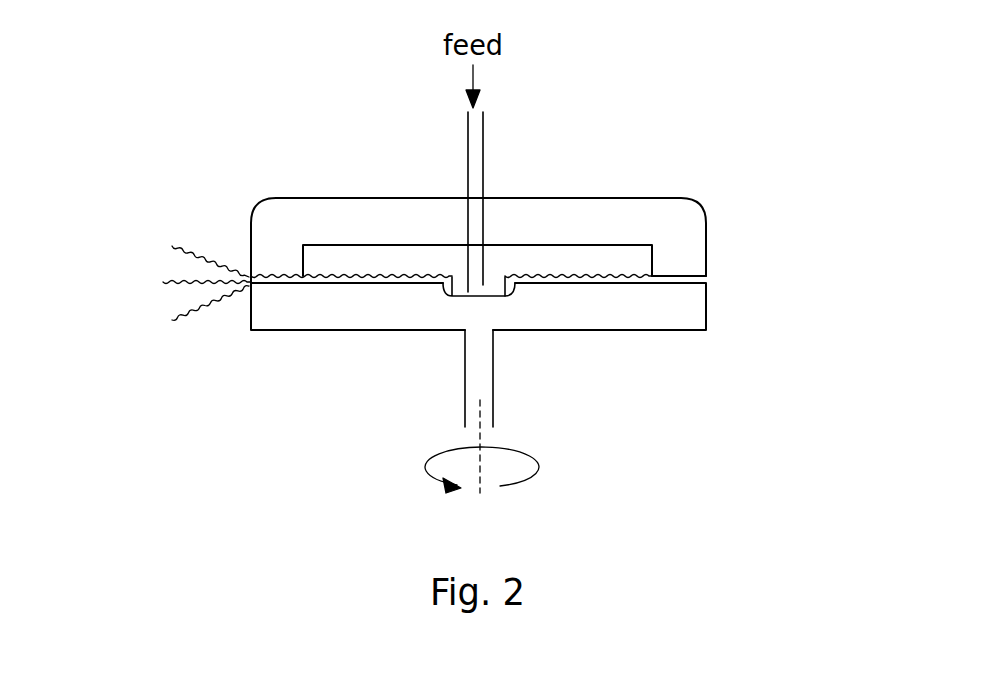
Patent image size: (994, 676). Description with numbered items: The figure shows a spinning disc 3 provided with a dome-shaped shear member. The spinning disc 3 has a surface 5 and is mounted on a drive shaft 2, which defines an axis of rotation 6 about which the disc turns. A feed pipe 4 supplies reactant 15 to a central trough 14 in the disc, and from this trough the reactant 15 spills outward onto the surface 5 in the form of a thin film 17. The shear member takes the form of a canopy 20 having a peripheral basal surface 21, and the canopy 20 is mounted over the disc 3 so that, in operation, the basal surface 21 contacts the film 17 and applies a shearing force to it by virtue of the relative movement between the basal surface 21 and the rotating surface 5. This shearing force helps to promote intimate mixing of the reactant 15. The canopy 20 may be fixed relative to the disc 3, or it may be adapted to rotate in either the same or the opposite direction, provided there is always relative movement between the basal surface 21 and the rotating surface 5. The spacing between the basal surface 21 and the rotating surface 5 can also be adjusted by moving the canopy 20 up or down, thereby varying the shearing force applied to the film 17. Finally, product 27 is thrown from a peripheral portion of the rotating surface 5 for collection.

The drive shaft 2 is at (480, 362).
The spinning disc 3 is at (342, 318).
The feed pipe 4 is at (472, 167).
The surface 5 is at (592, 277).
The axis of rotation 6 is at (483, 478).
The central trough 14 is at (461, 286).
The reactant 15 is at (502, 290).
The film 17 is at (360, 277).
The canopy 20 is at (677, 209).
The peripheral basal surface 21 is at (683, 273).
The product 27 is at (190, 270).